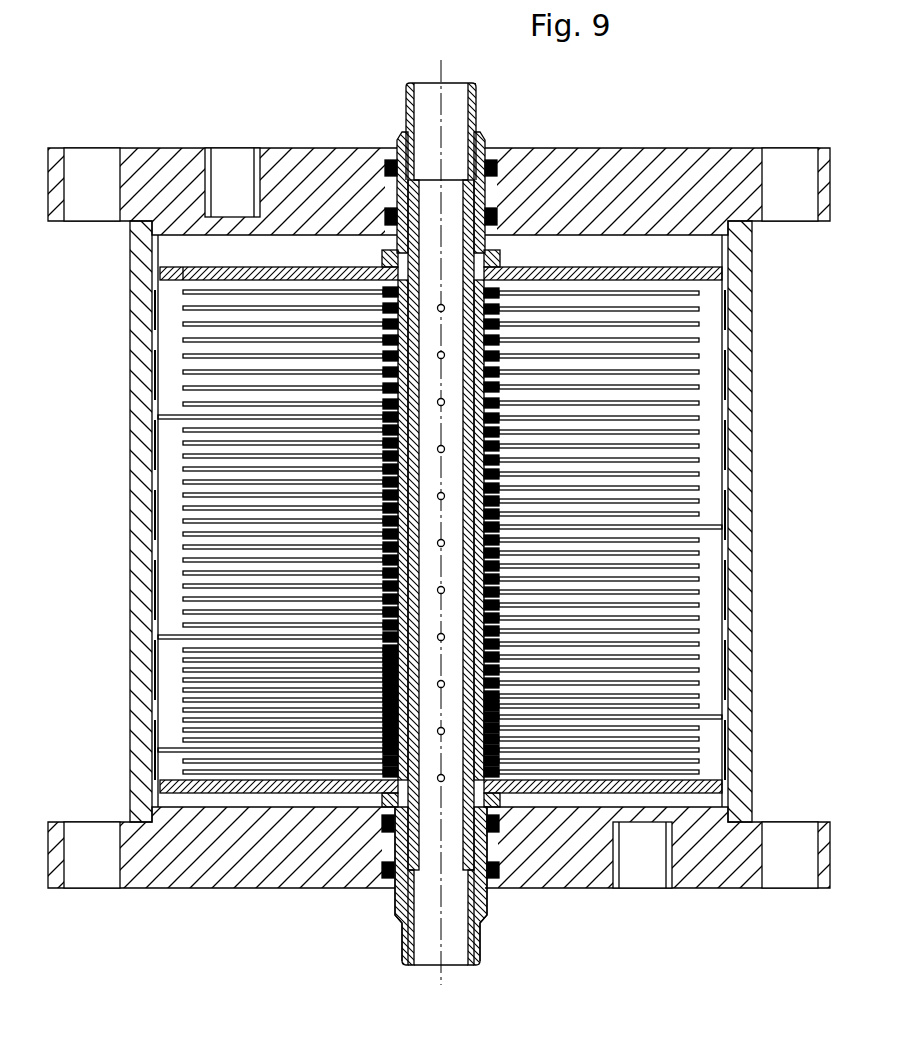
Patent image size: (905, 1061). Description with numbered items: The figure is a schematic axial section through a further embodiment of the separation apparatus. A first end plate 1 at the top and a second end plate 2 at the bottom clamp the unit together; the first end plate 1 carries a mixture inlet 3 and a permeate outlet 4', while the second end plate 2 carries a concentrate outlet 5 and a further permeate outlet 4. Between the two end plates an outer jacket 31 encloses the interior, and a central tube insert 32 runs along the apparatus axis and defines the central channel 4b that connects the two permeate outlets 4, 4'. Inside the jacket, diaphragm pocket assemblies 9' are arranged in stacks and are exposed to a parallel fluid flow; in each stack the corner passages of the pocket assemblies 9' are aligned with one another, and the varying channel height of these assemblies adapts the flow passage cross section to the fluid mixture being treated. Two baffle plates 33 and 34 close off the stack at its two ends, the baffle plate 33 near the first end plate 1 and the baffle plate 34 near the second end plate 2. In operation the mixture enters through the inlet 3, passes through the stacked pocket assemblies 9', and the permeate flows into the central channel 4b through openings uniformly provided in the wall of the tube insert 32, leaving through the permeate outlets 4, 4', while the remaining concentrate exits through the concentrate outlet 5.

The first end plate 1 is at (585, 160).
The second end plate 2 is at (327, 872).
The mixture inlet 3 is at (226, 162).
The permeate outlet 4 is at (441, 534).
The permeate outlet 4' is at (441, 95).
The central channel 4b is at (427, 840).
The concentrate outlet 5 is at (634, 870).
The diaphragm pocket assemblies 9' is at (407, 532).
The outer jacket 31 is at (740, 551).
The tube insert 32 is at (478, 850).
The baffle plate 33 is at (316, 267).
The baffle plate 34 is at (235, 793).